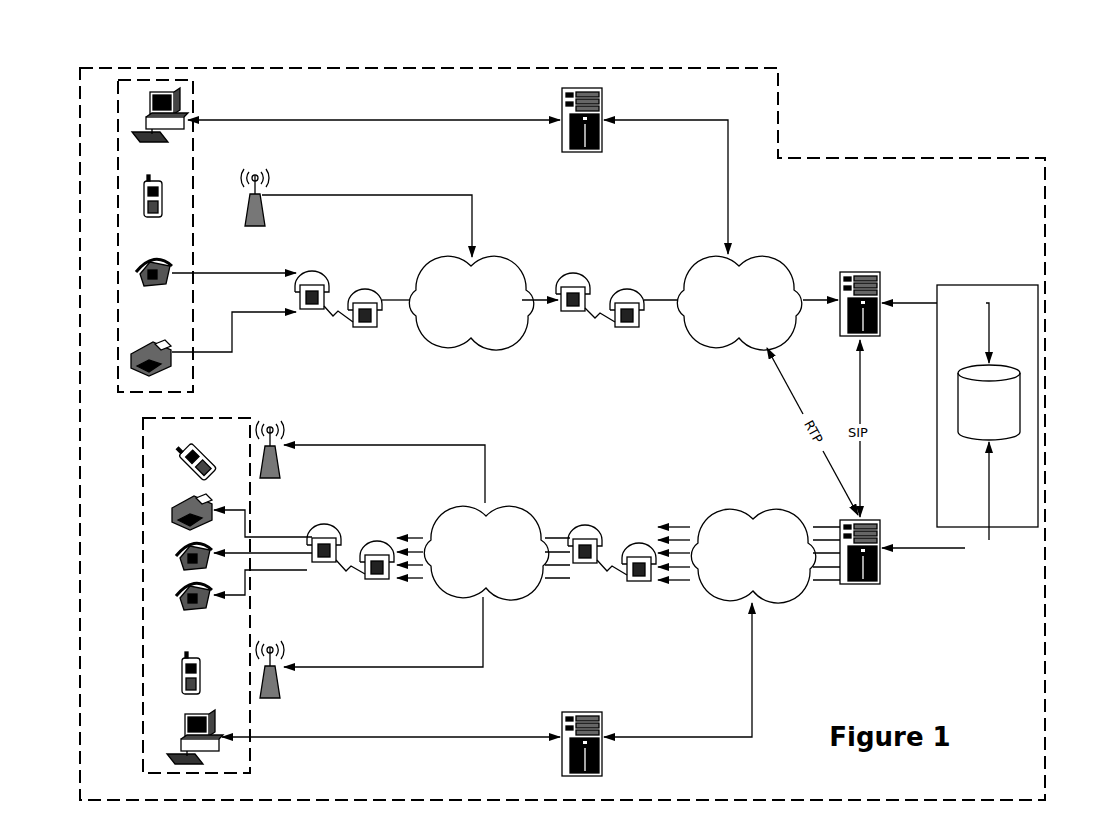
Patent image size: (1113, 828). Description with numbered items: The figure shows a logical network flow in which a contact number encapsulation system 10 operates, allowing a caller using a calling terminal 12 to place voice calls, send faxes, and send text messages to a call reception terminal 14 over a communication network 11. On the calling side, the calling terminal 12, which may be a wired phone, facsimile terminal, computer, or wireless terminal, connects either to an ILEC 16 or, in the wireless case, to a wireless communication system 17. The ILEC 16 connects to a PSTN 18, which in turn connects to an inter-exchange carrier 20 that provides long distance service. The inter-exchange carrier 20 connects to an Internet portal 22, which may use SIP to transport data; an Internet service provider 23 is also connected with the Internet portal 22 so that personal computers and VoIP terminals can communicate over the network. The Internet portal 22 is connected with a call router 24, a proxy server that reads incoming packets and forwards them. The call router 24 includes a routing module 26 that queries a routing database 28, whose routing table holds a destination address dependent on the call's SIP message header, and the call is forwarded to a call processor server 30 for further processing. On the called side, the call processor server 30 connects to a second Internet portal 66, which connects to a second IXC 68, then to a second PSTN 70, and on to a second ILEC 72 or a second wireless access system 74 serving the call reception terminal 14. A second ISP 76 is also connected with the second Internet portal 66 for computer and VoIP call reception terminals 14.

The contact number encapsulation system 10 is at (982, 88).
The communication network 11 is at (823, 159).
The calling terminal 12 is at (194, 94).
The call reception terminal 14 is at (140, 525).
The ILEC 16 is at (340, 272).
The wireless communication system 17 is at (259, 193).
The PSTN 18 is at (497, 255).
The inter-exchange carrier 20 is at (603, 273).
The Internet portal 22 is at (752, 256).
The Internet service provider 23 is at (587, 88).
The call router 24 is at (883, 300).
The routing module 26 is at (985, 285).
The routing database 28 is at (1021, 400).
The call processor server 30 is at (866, 518).
The second Internet portal 66 is at (731, 506).
The second IXC 68 is at (612, 528).
The second PSTN 70 is at (497, 503).
The second ILEC 72 is at (356, 525).
The second wireless access system 74 is at (278, 440).
The second ISP 76 is at (585, 712).